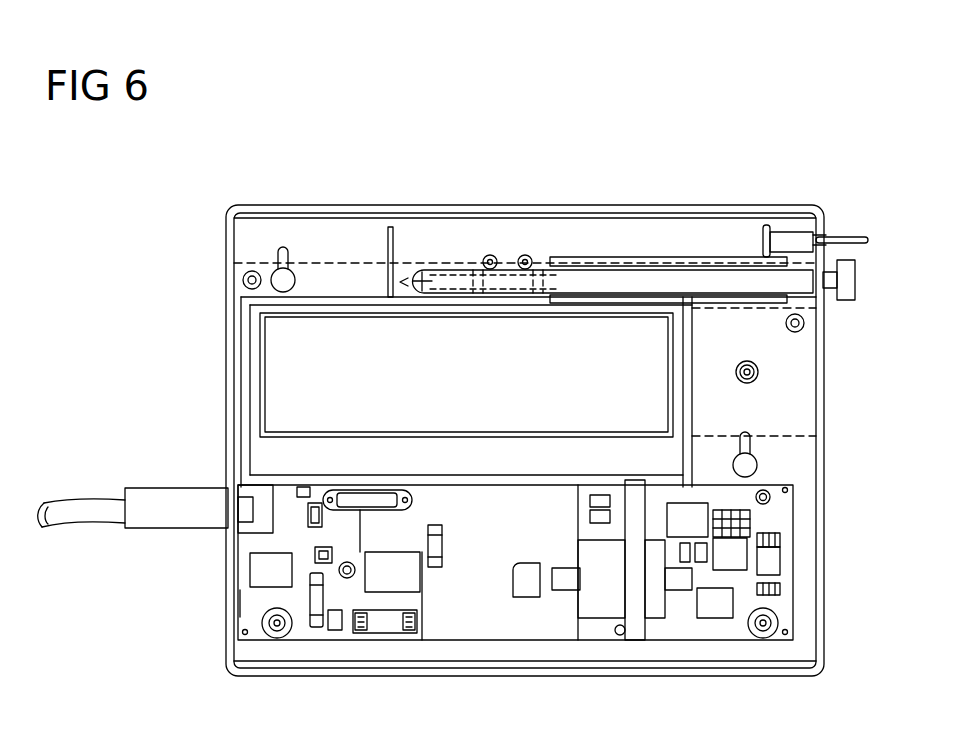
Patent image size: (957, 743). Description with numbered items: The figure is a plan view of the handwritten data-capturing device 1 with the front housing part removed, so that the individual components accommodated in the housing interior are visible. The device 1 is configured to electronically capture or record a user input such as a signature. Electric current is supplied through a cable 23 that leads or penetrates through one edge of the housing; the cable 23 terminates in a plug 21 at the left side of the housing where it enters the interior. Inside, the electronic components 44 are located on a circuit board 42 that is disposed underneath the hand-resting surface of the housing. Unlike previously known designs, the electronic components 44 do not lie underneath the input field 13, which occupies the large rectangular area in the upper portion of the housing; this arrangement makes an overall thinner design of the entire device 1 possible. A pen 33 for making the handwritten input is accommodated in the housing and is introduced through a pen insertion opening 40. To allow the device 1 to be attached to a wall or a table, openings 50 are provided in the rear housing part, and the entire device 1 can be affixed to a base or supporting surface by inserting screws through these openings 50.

The handwritten data-capturing device 1 is at (612, 170).
The input field 13 is at (662, 328).
The plug 21 is at (174, 500).
The cable 23 is at (78, 505).
The pen 33 is at (848, 300).
The pen insertion opening 40 is at (756, 370).
The circuit board 42 is at (780, 507).
The electronic components 44 is at (258, 578).
The openings 50 is at (292, 260).